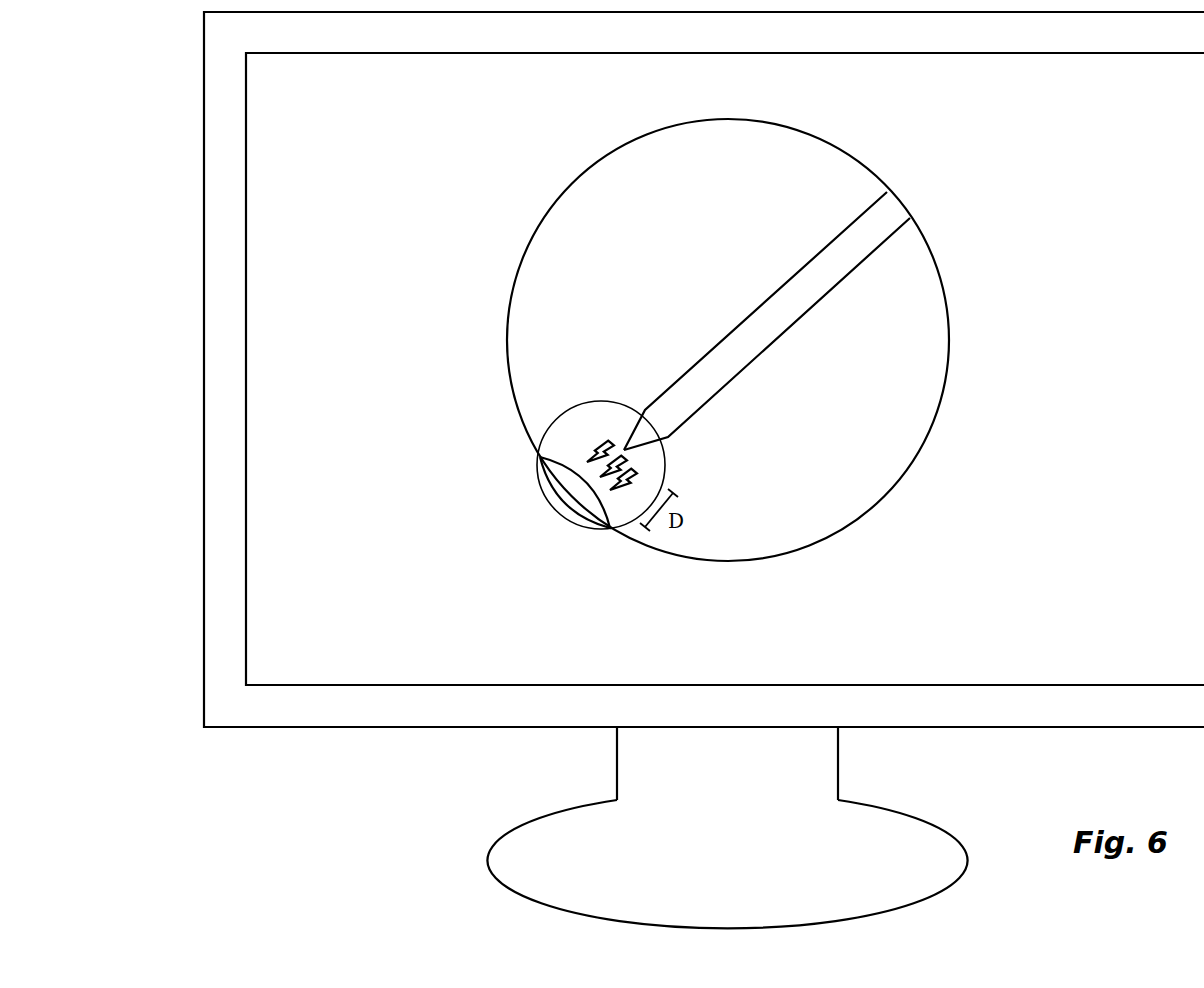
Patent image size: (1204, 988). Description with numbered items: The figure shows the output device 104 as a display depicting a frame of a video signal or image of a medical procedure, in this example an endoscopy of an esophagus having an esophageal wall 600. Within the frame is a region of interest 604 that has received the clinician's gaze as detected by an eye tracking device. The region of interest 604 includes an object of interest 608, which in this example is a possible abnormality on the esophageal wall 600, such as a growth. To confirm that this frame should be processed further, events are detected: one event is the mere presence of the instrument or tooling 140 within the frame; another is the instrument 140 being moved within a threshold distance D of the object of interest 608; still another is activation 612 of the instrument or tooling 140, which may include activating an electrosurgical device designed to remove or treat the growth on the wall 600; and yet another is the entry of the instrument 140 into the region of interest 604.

The output device 104 is at (203, 68).
The esophageal wall 600 is at (949, 317).
The instrument or tooling 140 is at (818, 303).
The region of interest 604 is at (542, 437).
The object of interest 608 is at (577, 483).
The activation 612 is at (587, 438).